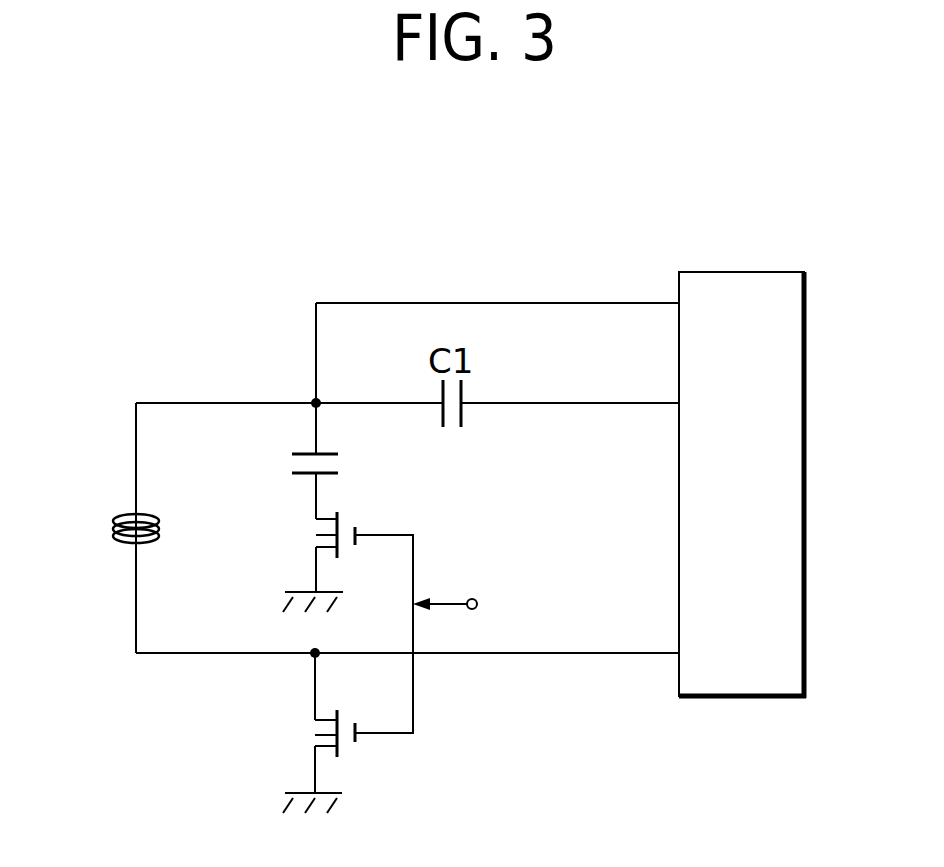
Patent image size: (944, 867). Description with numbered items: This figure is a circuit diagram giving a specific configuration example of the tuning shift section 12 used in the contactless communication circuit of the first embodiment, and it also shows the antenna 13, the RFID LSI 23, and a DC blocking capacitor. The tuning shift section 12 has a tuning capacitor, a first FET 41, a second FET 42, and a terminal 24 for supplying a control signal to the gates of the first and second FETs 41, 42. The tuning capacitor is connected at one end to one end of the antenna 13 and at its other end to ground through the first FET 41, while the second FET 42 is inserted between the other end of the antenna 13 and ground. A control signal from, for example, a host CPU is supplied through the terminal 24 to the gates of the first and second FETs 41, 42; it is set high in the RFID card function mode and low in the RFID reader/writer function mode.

The tuning shift section 12 is at (311, 629).
The antenna 13 is at (112, 527).
The RFID LSI 23 is at (806, 468).
The terminal 24 is at (470, 598).
The first FET 41 is at (357, 527).
The second FET 42 is at (357, 742).